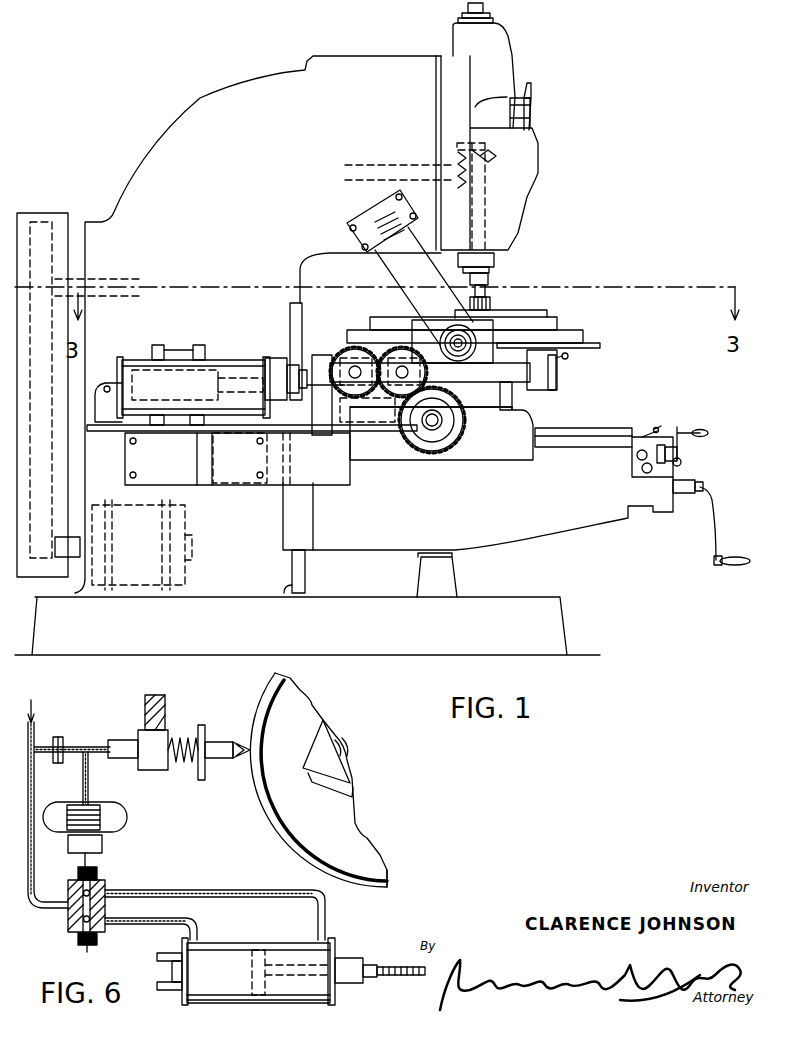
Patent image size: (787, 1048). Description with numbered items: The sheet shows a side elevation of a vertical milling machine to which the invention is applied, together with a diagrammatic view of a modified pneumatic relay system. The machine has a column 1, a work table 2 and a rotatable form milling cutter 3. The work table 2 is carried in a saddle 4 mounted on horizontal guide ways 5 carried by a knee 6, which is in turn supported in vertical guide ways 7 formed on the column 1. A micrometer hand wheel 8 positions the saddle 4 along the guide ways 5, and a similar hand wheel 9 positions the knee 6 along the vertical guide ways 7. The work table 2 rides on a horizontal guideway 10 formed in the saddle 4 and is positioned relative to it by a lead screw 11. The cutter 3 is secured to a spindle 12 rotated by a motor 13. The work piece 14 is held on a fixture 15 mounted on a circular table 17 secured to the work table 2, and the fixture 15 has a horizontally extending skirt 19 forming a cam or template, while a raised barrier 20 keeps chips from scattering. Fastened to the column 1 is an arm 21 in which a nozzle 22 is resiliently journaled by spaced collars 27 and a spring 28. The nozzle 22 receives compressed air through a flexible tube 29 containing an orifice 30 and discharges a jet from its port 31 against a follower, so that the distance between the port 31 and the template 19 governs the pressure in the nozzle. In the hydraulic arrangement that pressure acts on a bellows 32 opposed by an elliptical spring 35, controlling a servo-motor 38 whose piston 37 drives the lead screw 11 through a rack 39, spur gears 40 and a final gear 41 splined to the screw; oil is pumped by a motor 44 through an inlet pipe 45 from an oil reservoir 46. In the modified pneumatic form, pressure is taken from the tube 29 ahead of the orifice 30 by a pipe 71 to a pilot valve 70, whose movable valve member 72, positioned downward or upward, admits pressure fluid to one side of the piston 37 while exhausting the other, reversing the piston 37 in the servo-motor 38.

In FIG. 1, the column 1 is at (172, 137).
In FIG. 1, the work table 2 is at (513, 398).
In FIG. 1, the form milling cutter 3 is at (491, 305).
In FIG. 1, the saddle 4 is at (520, 461).
In FIG. 1, the horizontal guide ways 5 is at (590, 428).
In FIG. 1, the knee 6 is at (585, 530).
In FIG. 1, the vertical guide ways 7 is at (306, 577).
In FIG. 1, the micrometer hand wheel 8 is at (672, 438).
In FIG. 1, the hand wheel 9 is at (718, 522).
In FIG. 1, the horizontal guideway 10 is at (478, 410).
In FIG. 1, the lead screw 11 is at (431, 431).
In FIG. 1, the spindle 12 is at (491, 284).
In FIG. 1, the motor 13 is at (186, 516).
In FIG. 1, the work piece 14 is at (546, 311).
In FIG. 1, the fixture 15 is at (316, 737).
In FIG. 1, the circular table 17 is at (500, 388).
In FIG. 1, the skirt 19 is at (603, 346).
In FIG. 1, the raised barrier 20 is at (586, 333).
In FIG. 1, the arm 21 is at (386, 264).
In FIG. 6, the arm 21 is at (166, 701).
In FIG. 6, the nozzle 22 is at (242, 760).
In FIG. 6, the spaced collars 27 is at (138, 762).
In FIG. 6, the spring 28 is at (178, 766).
In FIG. 6, the flexible tube 29 is at (34, 726).
In FIG. 6, the orifice 30 is at (60, 736).
In FIG. 6, the port 31 is at (245, 744).
In FIG. 6, the bellows 32 is at (68, 807).
In FIG. 6, the elliptical spring 35 is at (128, 816).
In FIG. 6, the piston 37 is at (252, 965).
In FIG. 1, the servo-motor 38 is at (240, 358).
In FIG. 6, the servo-motor 38 is at (276, 943).
In FIG. 1, the rack 39 is at (323, 432).
In FIG. 6, the rack 39 is at (393, 960).
In FIG. 1, the spur gears 40 is at (321, 448).
In FIG. 1, the final gear 41 is at (463, 432).
In FIG. 1, the motor 44 is at (175, 347).
In FIG. 1, the inlet pipe 45 is at (280, 470).
In FIG. 1, the oil reservoir 46 is at (338, 487).
In FIG. 6, the pilot valve 70 is at (105, 883).
In FIG. 6, the pipe 71 is at (48, 909).
In FIG. 6, the movable valve member 72 is at (92, 863).